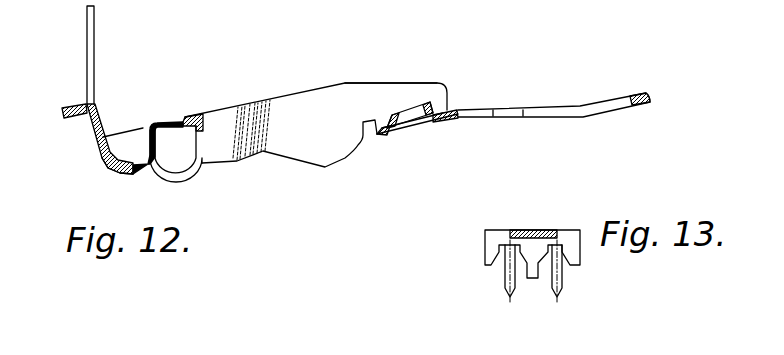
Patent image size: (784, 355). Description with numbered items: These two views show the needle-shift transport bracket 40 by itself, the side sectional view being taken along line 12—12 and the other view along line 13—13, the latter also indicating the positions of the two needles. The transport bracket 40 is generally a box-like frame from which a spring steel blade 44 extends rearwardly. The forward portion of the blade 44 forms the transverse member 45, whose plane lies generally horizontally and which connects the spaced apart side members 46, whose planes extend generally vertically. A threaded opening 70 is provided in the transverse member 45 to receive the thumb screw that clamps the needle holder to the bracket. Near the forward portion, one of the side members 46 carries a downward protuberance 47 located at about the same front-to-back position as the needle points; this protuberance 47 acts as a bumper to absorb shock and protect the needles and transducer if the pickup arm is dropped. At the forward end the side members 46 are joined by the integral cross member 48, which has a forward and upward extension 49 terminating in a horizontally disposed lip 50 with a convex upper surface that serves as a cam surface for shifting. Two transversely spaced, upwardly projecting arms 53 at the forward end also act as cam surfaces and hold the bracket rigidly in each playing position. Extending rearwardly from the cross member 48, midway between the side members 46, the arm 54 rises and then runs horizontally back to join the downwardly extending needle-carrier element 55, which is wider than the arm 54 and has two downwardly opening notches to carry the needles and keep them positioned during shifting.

In FIG. 12, the needle-shift transport bracket 40 is at (271, 91).
In FIG. 12, the spring steel blade 44 is at (638, 81).
In FIG. 12, the transverse member 45 is at (388, 138).
In FIG. 12, the side members 46 is at (323, 88).
In FIG. 12, the downward protuberance 47 is at (182, 183).
In FIG. 12, the cross member 48 is at (118, 170).
In FIG. 12, the forward and upward extension 49 is at (97, 144).
In FIG. 12, the lip 50 is at (75, 107).
In FIG. 12, the upwardly projecting arms 53 is at (87, 48).
In FIG. 12, the arm 54 is at (158, 122).
In FIG. 13, the arm 54 is at (528, 230).
In FIG. 13, the needle-carrier element 55 is at (578, 258).
In FIG. 12, the threaded opening 70 is at (418, 121).
In FIG. 13, the section line 12- 12 is at (558, 223).
In FIG. 12, the section line 13- 13 is at (175, 85).